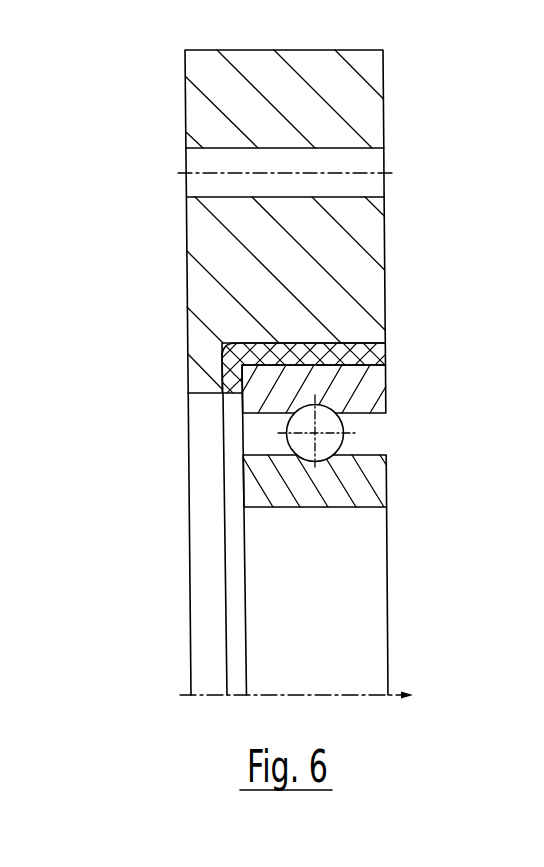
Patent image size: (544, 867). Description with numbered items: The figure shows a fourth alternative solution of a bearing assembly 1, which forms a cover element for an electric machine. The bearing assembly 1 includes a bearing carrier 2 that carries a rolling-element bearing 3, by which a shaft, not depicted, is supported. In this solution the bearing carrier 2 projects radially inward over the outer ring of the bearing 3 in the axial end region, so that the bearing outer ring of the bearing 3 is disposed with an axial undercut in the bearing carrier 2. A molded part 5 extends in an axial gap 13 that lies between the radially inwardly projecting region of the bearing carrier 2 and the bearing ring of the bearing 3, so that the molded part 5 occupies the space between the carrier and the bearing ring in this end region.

The bearing assembly 1 is at (97, 142).
The bearing carrier 2 is at (363, 98).
The rolling-element bearing 3 is at (363, 430).
The molded part 5 is at (378, 345).
The axial gap 13 is at (223, 377).